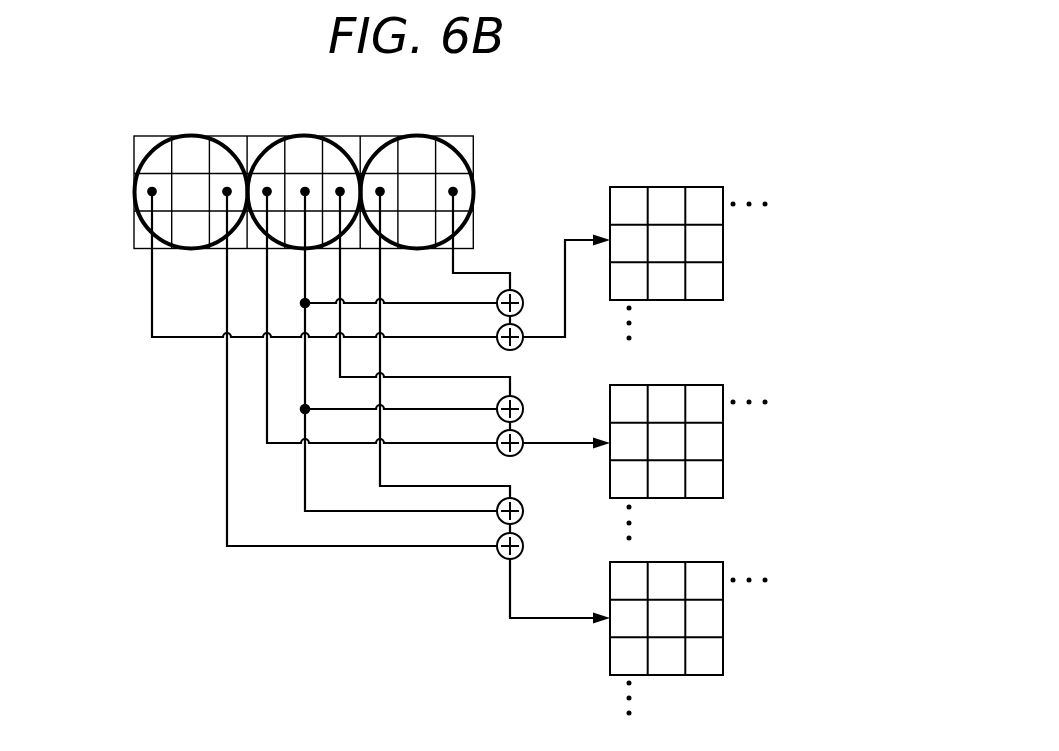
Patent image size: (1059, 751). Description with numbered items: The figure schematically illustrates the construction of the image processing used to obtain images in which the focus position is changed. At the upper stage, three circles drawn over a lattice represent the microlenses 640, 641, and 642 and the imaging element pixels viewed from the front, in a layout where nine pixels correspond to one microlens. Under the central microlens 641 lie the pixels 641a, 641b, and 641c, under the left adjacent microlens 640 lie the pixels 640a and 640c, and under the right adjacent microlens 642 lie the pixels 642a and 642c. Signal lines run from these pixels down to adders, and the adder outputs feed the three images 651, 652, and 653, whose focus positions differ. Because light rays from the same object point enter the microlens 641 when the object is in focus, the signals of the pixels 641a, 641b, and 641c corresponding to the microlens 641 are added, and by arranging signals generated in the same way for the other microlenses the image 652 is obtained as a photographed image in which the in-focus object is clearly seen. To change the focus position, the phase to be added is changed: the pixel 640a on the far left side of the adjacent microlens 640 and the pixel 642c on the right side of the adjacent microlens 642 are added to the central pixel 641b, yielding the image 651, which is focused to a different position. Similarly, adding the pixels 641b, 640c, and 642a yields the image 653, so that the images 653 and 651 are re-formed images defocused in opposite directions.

The microlens 640 is at (147, 232).
The pixel under microlens 640 640a is at (135, 184).
The pixel under microlens 640 640c is at (227, 192).
The microlens 641 is at (267, 191).
The pixel under microlens 641 641a is at (246, 152).
The pixel under microlens 641 641b is at (305, 191).
The pixel under microlens 641 641c is at (340, 191).
The microlens 642 is at (458, 153).
The pixel under microlens 642 642a is at (380, 191).
The pixel under microlens 642 642c is at (453, 192).
The image of different focus position 651 is at (706, 187).
The image of different focus position 652 is at (706, 385).
The image of different focus position 653 is at (706, 562).